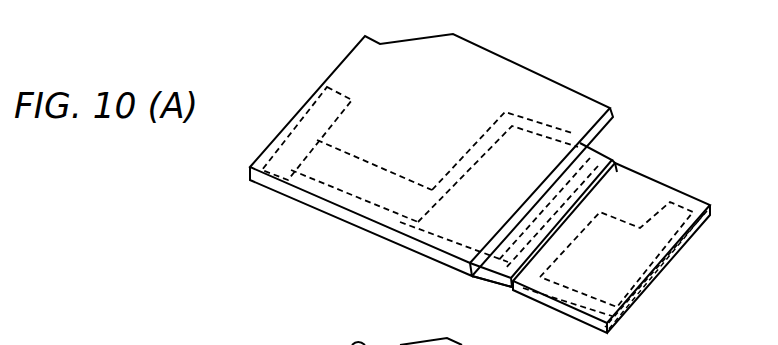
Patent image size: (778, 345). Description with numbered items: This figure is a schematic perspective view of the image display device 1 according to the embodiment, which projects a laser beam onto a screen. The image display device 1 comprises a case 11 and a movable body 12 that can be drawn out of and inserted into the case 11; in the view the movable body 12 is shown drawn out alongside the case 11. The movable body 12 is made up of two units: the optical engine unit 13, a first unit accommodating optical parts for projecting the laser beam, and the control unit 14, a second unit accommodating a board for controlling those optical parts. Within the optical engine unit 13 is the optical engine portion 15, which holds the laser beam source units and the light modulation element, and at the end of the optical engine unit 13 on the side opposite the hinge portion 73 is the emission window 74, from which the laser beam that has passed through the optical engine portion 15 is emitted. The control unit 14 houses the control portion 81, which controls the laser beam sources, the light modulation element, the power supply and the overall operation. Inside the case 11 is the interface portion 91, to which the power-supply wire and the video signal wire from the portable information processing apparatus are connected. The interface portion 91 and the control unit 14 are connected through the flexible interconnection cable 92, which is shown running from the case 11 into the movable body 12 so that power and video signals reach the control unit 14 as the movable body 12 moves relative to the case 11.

The image display device 1 is at (328, 58).
The case 11 is at (507, 55).
The movable body 12 is at (712, 109).
The optical engine unit 13 is at (663, 177).
The control unit 14 is at (598, 147).
The optical engine portion 15 is at (633, 271).
The hinge portion 73 is at (518, 289).
The emission window 74 is at (636, 302).
The control portion 81 is at (468, 223).
The interface portion 91 is at (305, 123).
The interconnection cable 92 is at (352, 190).